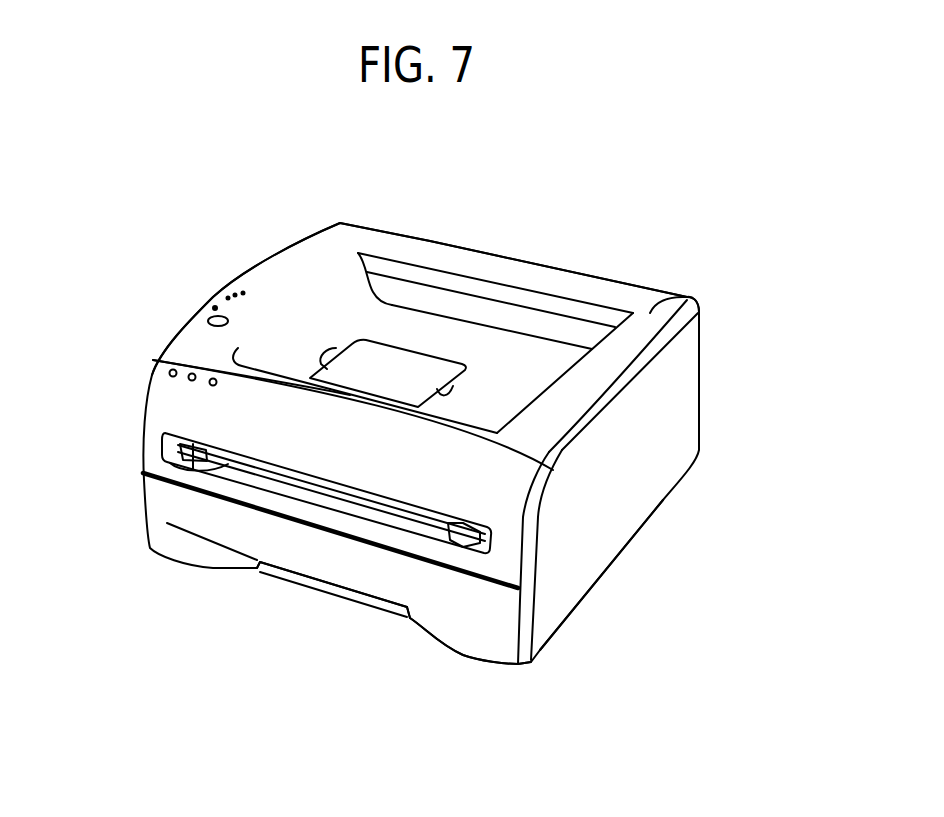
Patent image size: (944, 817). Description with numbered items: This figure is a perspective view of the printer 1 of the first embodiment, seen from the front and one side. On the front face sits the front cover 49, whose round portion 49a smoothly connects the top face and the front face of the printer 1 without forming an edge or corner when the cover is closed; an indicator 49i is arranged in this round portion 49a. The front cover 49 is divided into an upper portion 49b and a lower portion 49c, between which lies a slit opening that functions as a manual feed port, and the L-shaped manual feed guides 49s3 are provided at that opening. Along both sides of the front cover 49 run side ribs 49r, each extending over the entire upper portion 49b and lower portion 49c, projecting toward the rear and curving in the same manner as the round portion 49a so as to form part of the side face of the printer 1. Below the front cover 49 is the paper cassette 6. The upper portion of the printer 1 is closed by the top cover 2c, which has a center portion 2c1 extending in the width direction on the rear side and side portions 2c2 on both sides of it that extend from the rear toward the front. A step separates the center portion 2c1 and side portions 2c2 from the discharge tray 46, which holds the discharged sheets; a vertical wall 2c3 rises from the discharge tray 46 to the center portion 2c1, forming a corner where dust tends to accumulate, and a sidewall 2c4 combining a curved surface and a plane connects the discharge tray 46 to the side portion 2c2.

The printer 1 is at (582, 190).
The top cover 2c is at (467, 258).
The center portion 2c1 is at (530, 273).
The side portions 2c2 is at (293, 270).
The vertical wall 2c3 is at (537, 323).
The sidewall 2c4 is at (337, 290).
The discharge tray 46 is at (537, 373).
The front cover 49 is at (157, 415).
The round portion 49a is at (173, 390).
The upper portion 49b is at (513, 490).
The lower portion 49c is at (507, 563).
The side rib 49r is at (530, 523).
The indicator 49i is at (172, 371).
The manual feed guide 49s3 is at (200, 457).
The paper cassette 6 is at (322, 550).